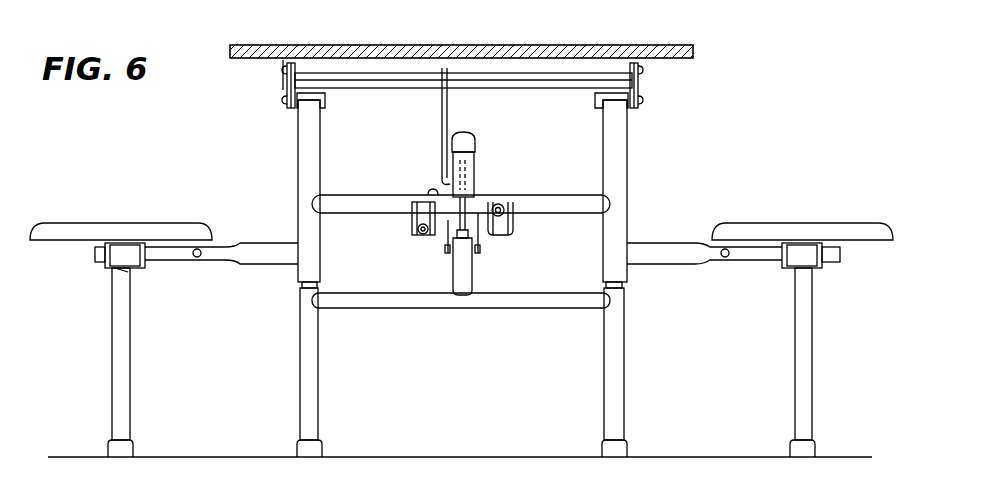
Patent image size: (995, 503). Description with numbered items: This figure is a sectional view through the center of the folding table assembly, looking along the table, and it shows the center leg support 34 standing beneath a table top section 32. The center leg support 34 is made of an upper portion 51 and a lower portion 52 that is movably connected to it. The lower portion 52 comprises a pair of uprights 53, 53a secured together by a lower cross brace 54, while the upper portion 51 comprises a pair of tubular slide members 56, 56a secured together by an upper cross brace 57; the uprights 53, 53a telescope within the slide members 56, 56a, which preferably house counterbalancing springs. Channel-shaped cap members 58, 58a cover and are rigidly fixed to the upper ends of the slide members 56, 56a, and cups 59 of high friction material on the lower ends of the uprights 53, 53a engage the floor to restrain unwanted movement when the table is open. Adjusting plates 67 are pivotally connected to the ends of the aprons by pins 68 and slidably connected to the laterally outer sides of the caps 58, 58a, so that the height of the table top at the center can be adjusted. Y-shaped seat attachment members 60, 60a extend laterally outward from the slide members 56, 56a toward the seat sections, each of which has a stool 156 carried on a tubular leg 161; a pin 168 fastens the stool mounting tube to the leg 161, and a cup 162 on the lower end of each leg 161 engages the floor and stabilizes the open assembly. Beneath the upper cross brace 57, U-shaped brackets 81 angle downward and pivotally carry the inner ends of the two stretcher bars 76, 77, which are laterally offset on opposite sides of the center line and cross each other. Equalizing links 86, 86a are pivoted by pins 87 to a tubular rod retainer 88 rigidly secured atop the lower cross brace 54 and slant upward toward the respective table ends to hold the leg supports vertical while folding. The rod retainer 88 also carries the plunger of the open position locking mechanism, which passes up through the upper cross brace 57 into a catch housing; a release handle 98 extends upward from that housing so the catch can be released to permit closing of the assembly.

The table top section 32 is at (437, 45).
The center leg support 34 is at (279, 191).
The upper portion 51 is at (619, 191).
The lower portion 52 is at (612, 364).
The upright 53 is at (318, 373).
The upright 53a is at (604, 390).
The lower cross brace 54 is at (522, 312).
The tubular slide member 56 is at (320, 152).
The tubular slide member 56a is at (604, 128).
The upper cross brace 57 is at (350, 201).
The channel-shaped cap member 58 is at (324, 99).
The channel-shaped cap member 58a is at (598, 99).
The cup 59 is at (318, 450).
The seat attachment member 60 is at (248, 262).
The seat attachment member 60a is at (675, 262).
The adjusting plate 67 is at (283, 103).
The pin 68 is at (287, 72).
The stretcher bar 76 is at (503, 206).
The stretcher bar 77 is at (428, 190).
The U-shaped bracket 81 is at (412, 226).
The link 86 is at (445, 248).
The link 86a is at (478, 152).
The pin 87 is at (482, 251).
The tubular rod retainer 88 is at (453, 280).
The release handle 98 is at (441, 100).
The stool 156 is at (75, 222).
The tubular leg 161 is at (130, 388).
The cup 162 is at (132, 448).
The pin 168 is at (110, 272).